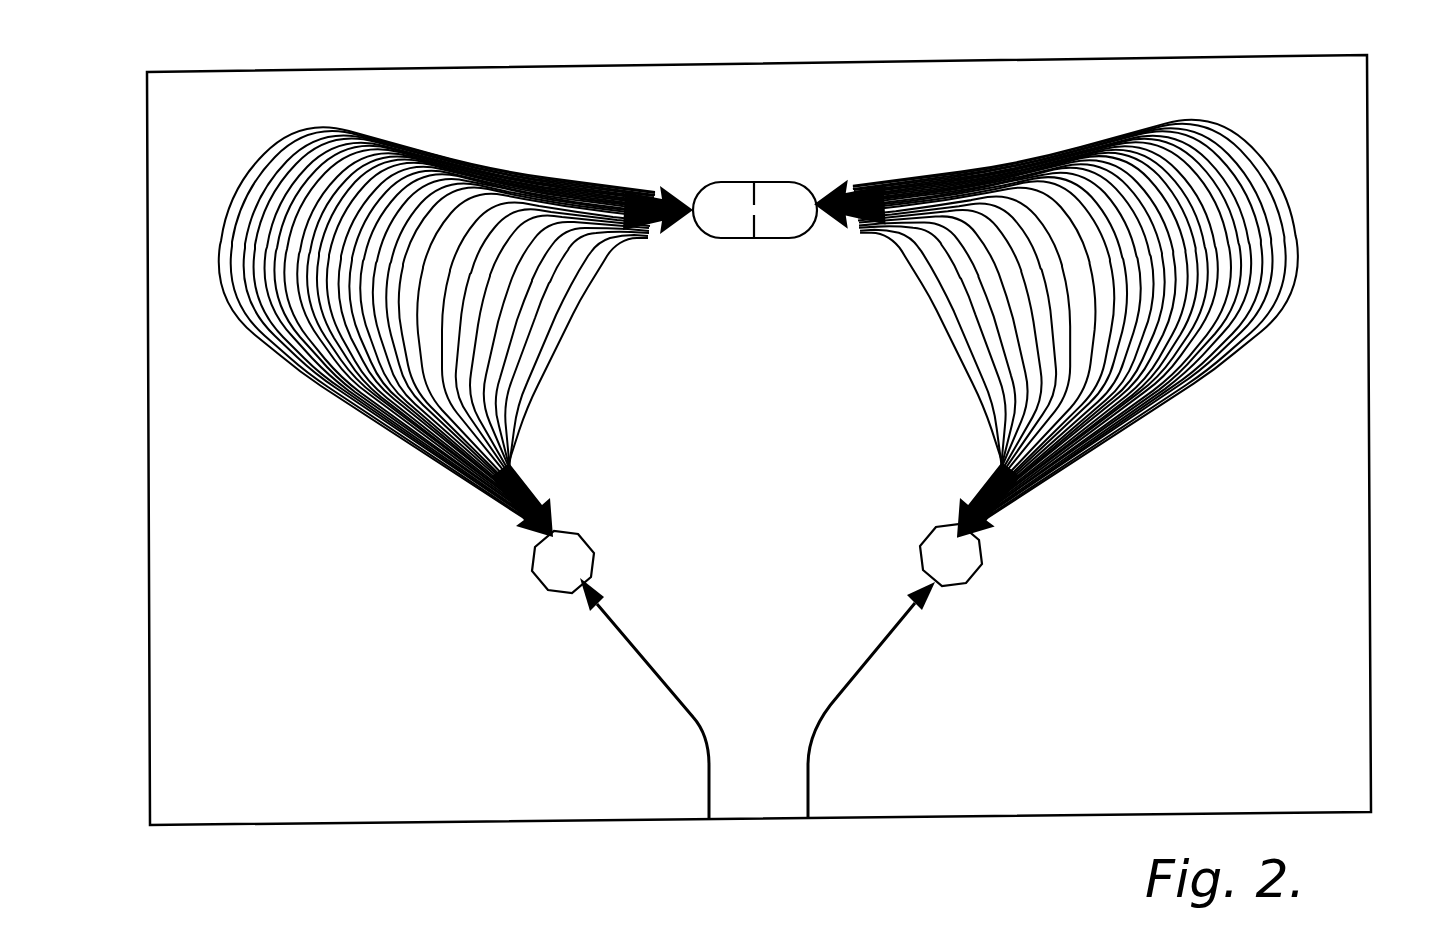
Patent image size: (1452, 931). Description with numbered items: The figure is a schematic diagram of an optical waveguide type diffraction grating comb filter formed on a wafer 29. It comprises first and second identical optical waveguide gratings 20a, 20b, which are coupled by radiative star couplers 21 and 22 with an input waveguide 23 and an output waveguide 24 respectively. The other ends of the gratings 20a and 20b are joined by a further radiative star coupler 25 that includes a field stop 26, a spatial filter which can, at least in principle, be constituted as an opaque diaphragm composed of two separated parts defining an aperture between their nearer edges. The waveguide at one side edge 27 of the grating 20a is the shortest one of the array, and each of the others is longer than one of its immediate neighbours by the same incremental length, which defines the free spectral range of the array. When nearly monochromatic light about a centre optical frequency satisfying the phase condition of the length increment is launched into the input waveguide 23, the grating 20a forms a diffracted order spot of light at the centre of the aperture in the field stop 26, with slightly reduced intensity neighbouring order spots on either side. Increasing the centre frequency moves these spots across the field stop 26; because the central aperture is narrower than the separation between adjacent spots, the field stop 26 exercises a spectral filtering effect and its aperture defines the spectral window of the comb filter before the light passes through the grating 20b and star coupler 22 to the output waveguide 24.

The first optical waveguide grating 20a is at (467, 307).
The second optical waveguide grating 20b is at (1152, 252).
The radiative star coupler 21 is at (552, 567).
The radiative star coupler 22 is at (960, 558).
The input waveguide 23 is at (690, 718).
The output waveguide 24 is at (838, 697).
The further radiative star coupler 25 is at (786, 200).
The field stop 26 is at (752, 200).
The side edge of the grating 27 is at (577, 305).
The wafer 29 is at (1369, 305).